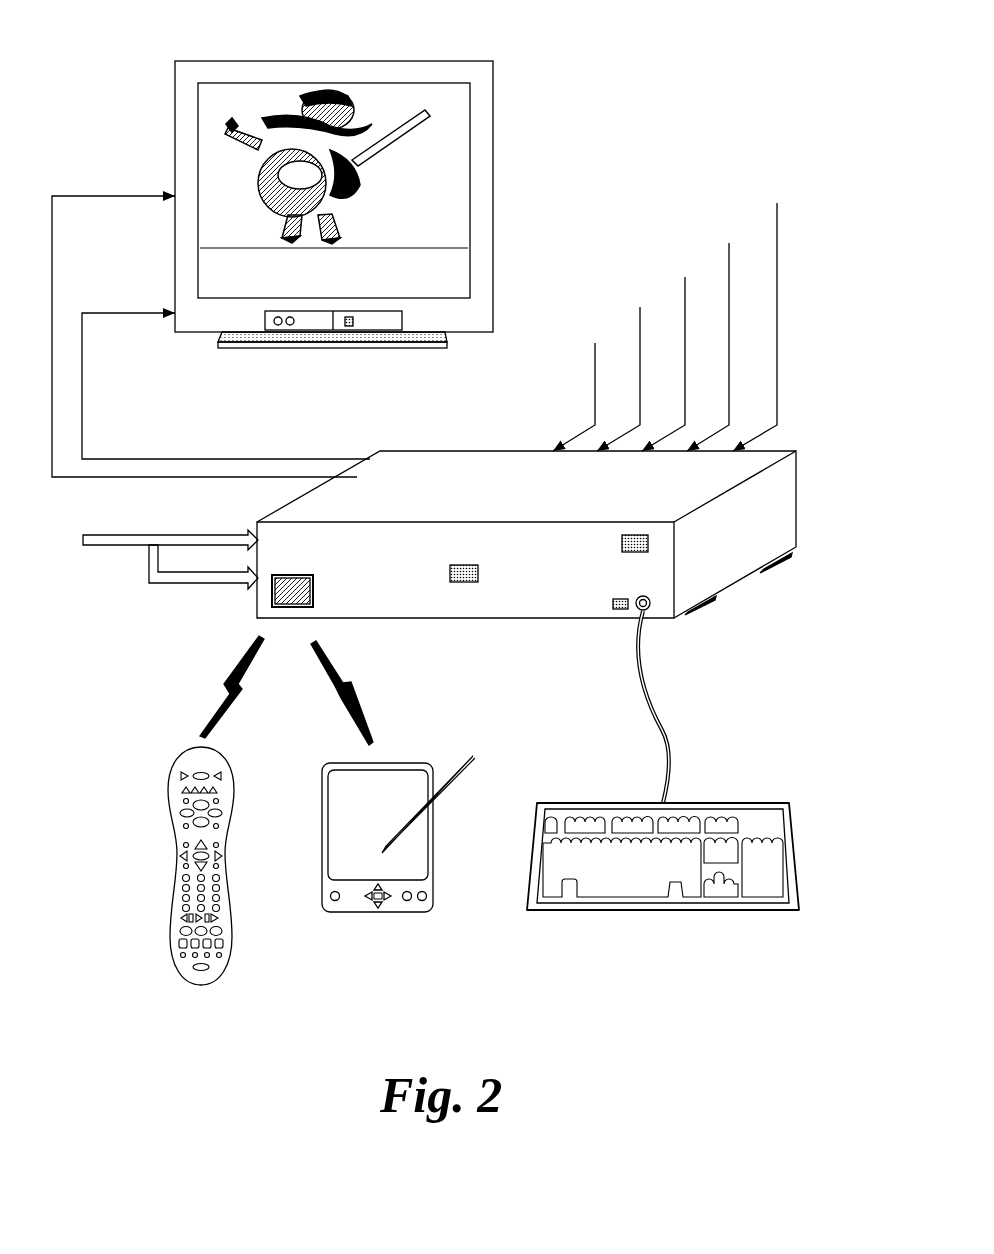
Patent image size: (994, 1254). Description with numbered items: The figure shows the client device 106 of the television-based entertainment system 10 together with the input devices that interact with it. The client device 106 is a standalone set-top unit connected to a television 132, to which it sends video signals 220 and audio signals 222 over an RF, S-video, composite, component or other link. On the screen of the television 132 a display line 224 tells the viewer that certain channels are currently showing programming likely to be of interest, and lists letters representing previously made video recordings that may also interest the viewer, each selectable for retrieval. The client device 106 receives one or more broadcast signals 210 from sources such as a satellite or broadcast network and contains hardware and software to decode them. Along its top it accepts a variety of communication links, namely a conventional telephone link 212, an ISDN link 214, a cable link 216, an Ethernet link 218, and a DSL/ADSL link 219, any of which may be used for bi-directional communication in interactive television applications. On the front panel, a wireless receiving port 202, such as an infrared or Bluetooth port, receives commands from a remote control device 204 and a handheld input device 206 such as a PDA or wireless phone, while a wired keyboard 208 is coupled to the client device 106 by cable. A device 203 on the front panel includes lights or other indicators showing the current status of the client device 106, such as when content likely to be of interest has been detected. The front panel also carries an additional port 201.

The system 10 is at (137, 58).
The television 132 is at (334, 204).
The display line 224 is at (468, 270).
The video signal 220 is at (204, 319).
The audio signal 222 is at (226, 368).
The client device 106 is at (439, 451).
The wireless receiving port 202 is at (307, 575).
The device 203 is at (477, 565).
The front panel port 201 is at (648, 535).
The broadcast signal 210 is at (133, 546).
The telephone link 212 is at (595, 310).
The ISDN link 214 is at (640, 273).
The cable link 216 is at (685, 243).
The Ethernet link 218 is at (730, 210).
The DSL/ADSL link 219 is at (778, 168).
The remote control device 204 is at (170, 775).
The handheld input device 206 is at (395, 763).
The wired keyboard 208 is at (707, 803).